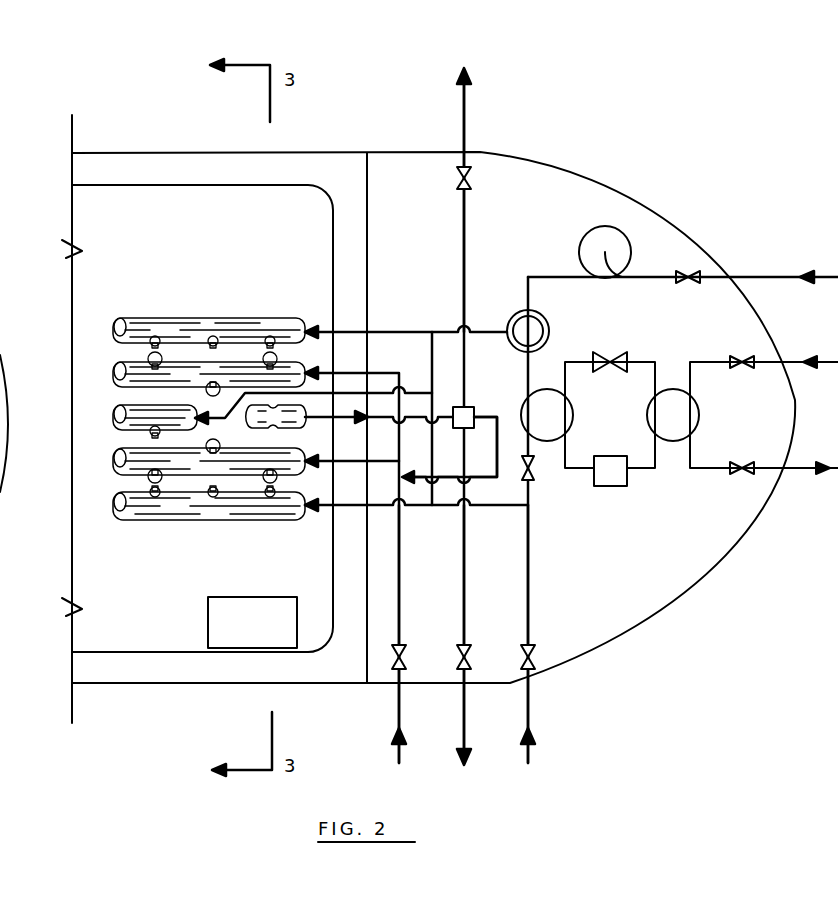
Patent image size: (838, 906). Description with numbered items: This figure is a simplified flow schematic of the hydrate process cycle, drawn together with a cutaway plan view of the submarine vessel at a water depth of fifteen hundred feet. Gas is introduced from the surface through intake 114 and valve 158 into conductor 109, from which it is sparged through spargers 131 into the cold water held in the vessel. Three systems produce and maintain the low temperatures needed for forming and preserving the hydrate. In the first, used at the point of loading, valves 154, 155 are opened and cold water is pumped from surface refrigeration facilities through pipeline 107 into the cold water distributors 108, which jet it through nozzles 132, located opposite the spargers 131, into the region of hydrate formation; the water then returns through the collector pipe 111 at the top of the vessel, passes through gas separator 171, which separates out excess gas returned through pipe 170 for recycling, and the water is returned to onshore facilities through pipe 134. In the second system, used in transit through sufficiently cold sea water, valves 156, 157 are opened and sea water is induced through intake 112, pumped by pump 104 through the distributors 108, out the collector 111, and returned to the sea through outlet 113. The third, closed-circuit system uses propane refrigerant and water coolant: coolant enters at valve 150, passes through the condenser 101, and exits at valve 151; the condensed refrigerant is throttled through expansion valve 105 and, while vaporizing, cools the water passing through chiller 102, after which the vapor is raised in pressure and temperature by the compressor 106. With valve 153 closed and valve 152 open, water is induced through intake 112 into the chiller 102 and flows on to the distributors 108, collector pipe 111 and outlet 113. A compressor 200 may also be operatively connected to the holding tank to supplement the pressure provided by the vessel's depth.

The condenser 101 is at (700, 418).
The chiller 102 is at (573, 418).
The pump 104 is at (587, 228).
The expansion valve 105 is at (610, 355).
The compressor 106 is at (617, 487).
The pipeline 107 is at (529, 585).
The cold water distributors 108 is at (115, 323).
The conductor 109 is at (112, 378).
The collector pipe 111 is at (255, 420).
The intake 112 is at (650, 280).
The outlet 113 is at (463, 244).
The intake 114 is at (400, 600).
The spargers 131 is at (268, 354).
The nozzles 132 is at (213, 336).
The pipe 134 is at (465, 600).
The valve 150 is at (742, 368).
The valve 151 is at (742, 475).
The valve 152 is at (536, 476).
The valve 153 is at (511, 305).
The valve 154 is at (535, 655).
The valve 155 is at (470, 655).
The valve 156 is at (692, 285).
The valve 157 is at (457, 178).
The valve 158 is at (405, 655).
The pipe 170 is at (490, 482).
The gas separator 171 is at (473, 405).
The compressor 200 is at (258, 590).